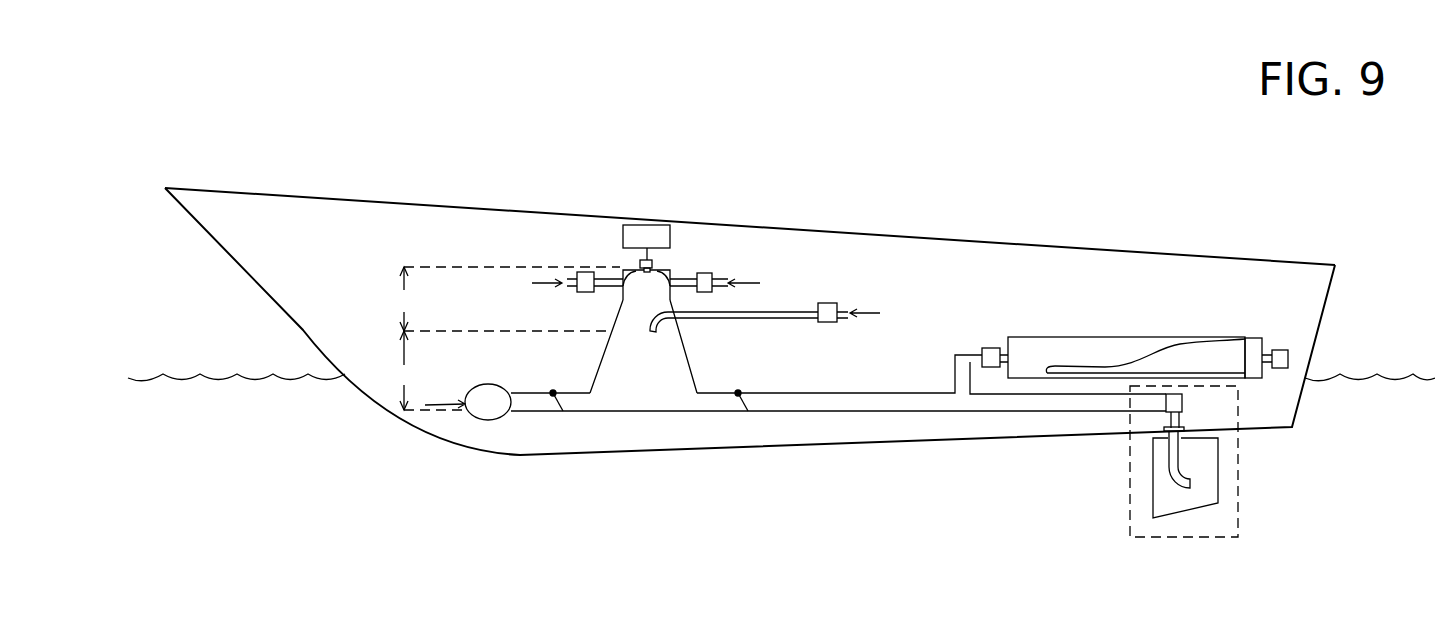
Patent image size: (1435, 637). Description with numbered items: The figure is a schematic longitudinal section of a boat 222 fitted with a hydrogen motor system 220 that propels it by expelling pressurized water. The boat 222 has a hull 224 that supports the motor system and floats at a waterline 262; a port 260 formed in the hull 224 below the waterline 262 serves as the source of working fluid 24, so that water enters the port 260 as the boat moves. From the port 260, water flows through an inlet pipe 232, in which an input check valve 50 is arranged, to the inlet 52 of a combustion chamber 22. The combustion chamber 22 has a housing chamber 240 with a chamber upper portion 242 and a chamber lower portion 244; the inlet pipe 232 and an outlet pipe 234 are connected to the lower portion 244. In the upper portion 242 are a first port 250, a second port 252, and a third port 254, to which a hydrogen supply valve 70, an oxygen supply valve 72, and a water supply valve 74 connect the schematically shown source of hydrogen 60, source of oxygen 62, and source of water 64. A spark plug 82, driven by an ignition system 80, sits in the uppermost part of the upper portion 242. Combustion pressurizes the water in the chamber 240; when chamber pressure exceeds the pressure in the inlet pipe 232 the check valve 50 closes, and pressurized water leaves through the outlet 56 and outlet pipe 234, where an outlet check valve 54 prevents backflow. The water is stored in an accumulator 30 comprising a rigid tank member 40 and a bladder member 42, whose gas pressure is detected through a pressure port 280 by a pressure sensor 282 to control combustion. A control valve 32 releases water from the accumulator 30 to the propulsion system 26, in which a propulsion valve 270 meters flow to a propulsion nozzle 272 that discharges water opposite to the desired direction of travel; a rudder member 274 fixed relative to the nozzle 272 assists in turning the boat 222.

The boat 222 is at (347, 192).
The hull 224 is at (230, 258).
The waterline 262 is at (215, 372).
The hydrogen motor system 220 is at (515, 294).
The chamber upper portion 242 is at (406, 299).
The chamber lower portion 244 is at (406, 370).
The combustion chamber 22 is at (607, 323).
The source of working fluid 24 is at (435, 407).
The port 260 is at (487, 420).
The source of hydrogen 60 is at (538, 278).
The hydrogen supply valve 70 is at (586, 272).
The source of oxygen 62 is at (758, 284).
The oxygen supply valve 72 is at (708, 274).
The ignition system 80 is at (653, 230).
The spark plug 82 is at (645, 262).
The second port 252 is at (667, 268).
The first port 250 is at (627, 263).
The housing chamber 240 is at (640, 363).
The third port 254 is at (662, 333).
The water supply valve 74 is at (826, 304).
The source of water 64 is at (877, 311).
The inlet 52 is at (582, 403).
The outlet 56 is at (713, 403).
The inlet pipe 232 is at (527, 405).
The outlet pipe 234 is at (782, 403).
The input check valve 50 is at (553, 402).
The outlet check valve 54 is at (733, 403).
The control valve 32 is at (990, 349).
The accumulator 30 is at (1108, 337).
The rigid tank member 40 is at (1095, 337).
The bladder member 42 is at (1088, 367).
The pressure port 280 is at (1268, 350).
The pressure sensor 282 is at (1288, 358).
The propulsion system 26 is at (1128, 498).
The propulsion valve 270 is at (1182, 403).
The rudder member 274 is at (1212, 467).
The propulsion nozzle 272 is at (1192, 483).